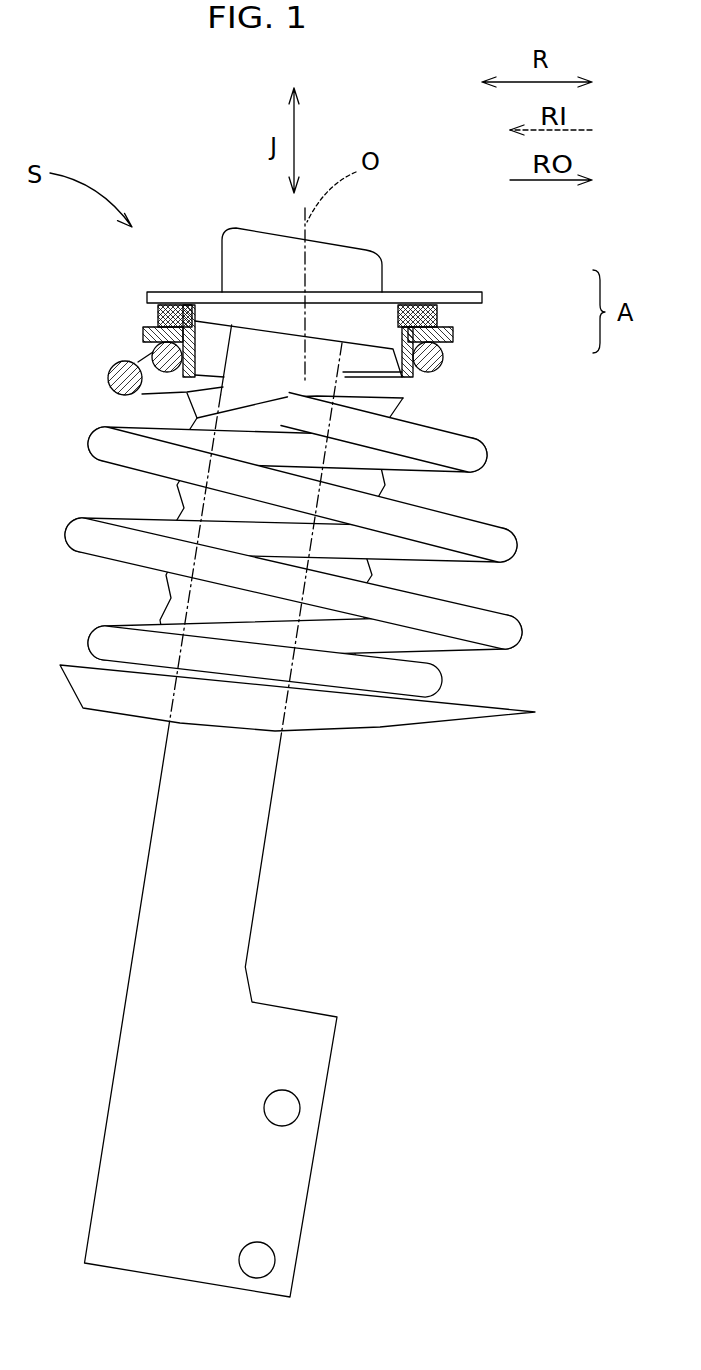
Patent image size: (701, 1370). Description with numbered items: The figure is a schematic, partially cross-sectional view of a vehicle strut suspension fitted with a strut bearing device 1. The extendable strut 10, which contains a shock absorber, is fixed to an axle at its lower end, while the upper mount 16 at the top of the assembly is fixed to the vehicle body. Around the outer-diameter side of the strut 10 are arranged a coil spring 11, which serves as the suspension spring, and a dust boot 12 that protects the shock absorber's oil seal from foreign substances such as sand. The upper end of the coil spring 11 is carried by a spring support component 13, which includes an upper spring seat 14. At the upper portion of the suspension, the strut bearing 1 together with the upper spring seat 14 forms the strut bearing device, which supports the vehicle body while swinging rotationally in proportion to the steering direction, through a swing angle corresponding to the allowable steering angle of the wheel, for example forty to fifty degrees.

The strut bearing device 1 is at (456, 321).
The strut 10 is at (278, 892).
The coil spring 11 is at (470, 458).
The dust boot 12 is at (372, 565).
The spring support component 13 is at (466, 366).
The upper spring seat 14 is at (472, 335).
The upper mount 16 is at (462, 292).